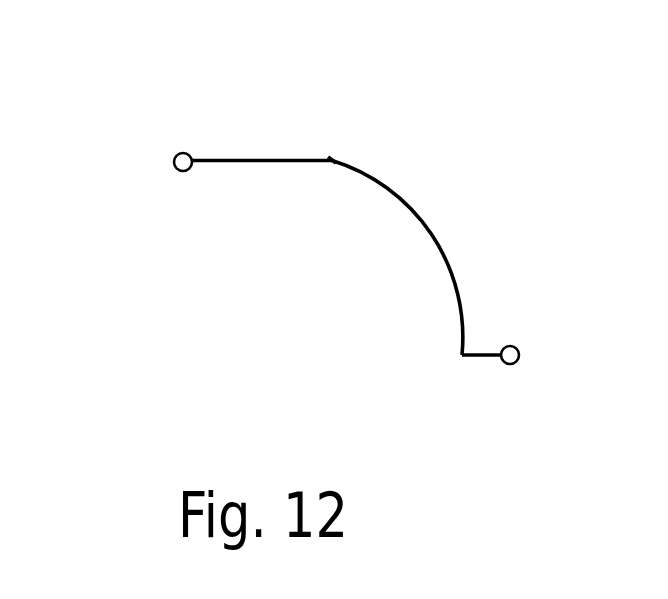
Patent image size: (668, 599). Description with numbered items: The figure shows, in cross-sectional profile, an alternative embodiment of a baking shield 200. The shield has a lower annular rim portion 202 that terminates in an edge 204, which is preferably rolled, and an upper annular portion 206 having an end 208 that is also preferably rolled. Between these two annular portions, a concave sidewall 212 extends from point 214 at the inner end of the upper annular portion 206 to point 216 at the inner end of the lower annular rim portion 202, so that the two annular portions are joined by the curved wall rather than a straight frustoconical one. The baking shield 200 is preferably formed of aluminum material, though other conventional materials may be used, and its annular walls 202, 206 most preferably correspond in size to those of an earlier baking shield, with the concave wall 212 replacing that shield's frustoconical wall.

The baking shield 200 is at (175, 152).
The lower annular rim portion 202 is at (486, 352).
The edge 204 is at (520, 357).
The upper annular portion 206 is at (257, 158).
The end 208 is at (176, 172).
The concave sidewall 212 is at (418, 215).
The point 214 is at (333, 159).
The point 216 is at (462, 356).